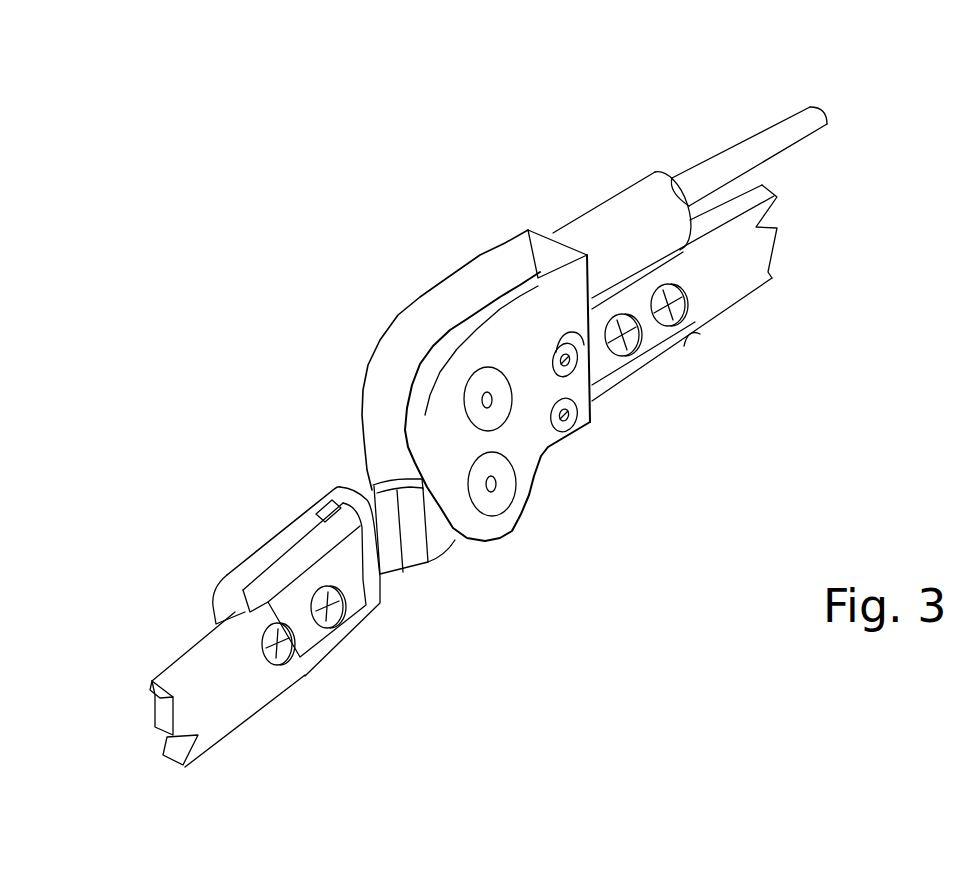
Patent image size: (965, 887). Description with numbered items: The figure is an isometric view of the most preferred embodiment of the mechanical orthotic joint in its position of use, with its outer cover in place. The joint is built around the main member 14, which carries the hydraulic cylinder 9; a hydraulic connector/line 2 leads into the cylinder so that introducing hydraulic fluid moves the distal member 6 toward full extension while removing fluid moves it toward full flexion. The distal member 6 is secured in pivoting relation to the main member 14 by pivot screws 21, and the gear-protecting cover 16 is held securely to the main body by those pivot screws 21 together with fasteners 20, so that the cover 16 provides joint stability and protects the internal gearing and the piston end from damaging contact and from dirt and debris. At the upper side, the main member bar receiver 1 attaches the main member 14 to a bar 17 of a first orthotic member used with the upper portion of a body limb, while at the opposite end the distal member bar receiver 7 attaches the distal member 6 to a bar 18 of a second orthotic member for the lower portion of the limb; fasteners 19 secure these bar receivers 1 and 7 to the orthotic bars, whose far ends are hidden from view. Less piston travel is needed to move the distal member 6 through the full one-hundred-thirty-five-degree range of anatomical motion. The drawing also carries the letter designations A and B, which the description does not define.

The main member bar receiver 1 is at (688, 342).
The hydraulic connector/line 2 is at (767, 137).
The distal member 6 is at (397, 510).
The distal member bar receiver 7 is at (290, 557).
The hydraulic cylinder 9 is at (618, 225).
The main member 14 is at (425, 327).
The gear-protecting cover 16 is at (483, 342).
The bar of a first orthotic member 17 is at (747, 253).
The bar of a second orthotic member 18 is at (207, 687).
The fastener 19 is at (663, 320).
The fastener 20 is at (552, 390).
The pivot screw 21 is at (508, 415).
The bore axis A is at (486, 400).
The bore axis B is at (490, 487).